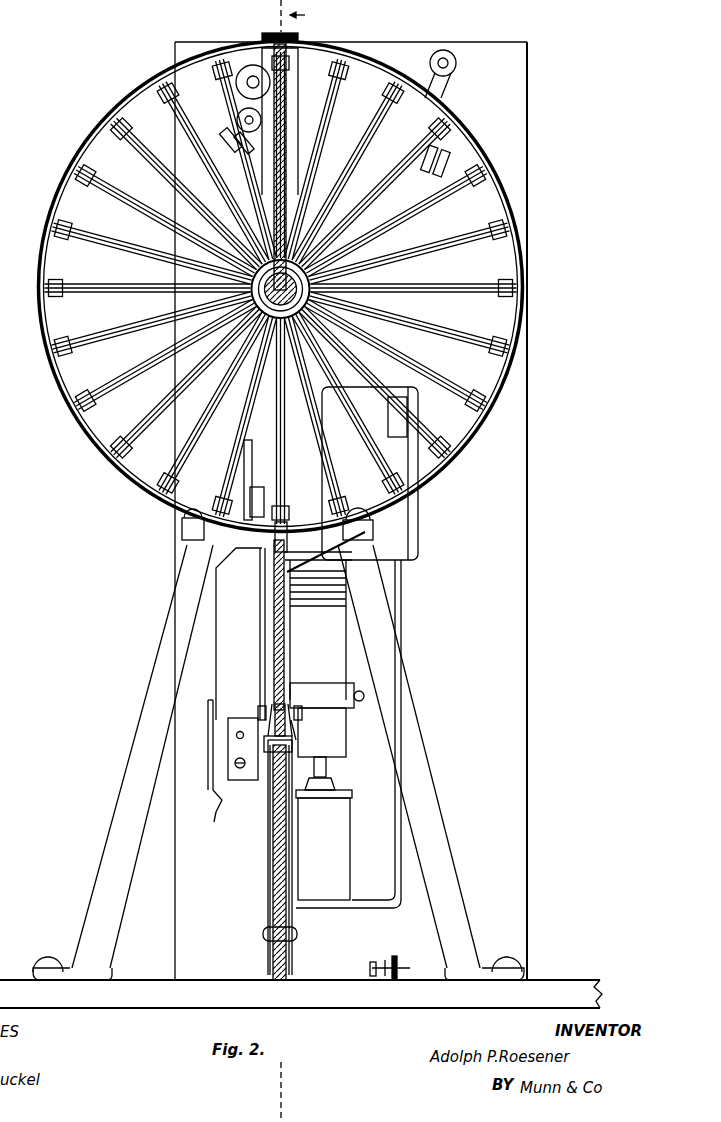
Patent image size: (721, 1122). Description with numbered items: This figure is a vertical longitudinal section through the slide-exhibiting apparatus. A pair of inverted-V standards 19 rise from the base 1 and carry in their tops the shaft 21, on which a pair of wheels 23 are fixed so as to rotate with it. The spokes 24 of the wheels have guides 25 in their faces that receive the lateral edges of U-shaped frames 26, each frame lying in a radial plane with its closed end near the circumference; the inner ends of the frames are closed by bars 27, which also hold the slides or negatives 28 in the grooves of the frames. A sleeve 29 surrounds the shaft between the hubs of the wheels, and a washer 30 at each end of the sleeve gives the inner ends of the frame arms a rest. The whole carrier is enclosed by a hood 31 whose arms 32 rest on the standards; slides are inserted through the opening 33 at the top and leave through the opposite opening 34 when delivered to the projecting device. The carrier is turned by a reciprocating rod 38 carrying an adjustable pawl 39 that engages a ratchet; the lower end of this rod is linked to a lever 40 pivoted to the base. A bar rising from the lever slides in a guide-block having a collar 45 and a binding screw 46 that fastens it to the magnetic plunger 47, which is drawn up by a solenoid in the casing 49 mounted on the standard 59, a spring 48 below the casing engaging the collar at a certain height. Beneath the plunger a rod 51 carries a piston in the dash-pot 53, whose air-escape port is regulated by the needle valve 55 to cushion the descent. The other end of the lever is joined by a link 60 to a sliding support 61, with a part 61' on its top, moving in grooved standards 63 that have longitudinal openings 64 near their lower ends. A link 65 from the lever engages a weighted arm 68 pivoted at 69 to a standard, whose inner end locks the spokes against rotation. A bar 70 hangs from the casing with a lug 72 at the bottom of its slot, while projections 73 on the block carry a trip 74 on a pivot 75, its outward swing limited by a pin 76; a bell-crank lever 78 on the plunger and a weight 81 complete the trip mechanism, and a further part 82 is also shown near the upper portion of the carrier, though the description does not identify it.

The base 1 is at (572, 982).
The standards 19 is at (120, 880).
The shaft 21 is at (283, 300).
The wheels 23 is at (78, 383).
The spokes 24 is at (118, 250).
The guides 25 is at (283, 445).
The U-shaped frames 26 is at (336, 120).
The bars 27 is at (284, 530).
The slides or negatives 28 is at (275, 625).
The sleeve 29 is at (168, 304).
The washer 30 is at (438, 242).
The hood 31 is at (478, 442).
The arms 32 is at (290, 97).
The opening 33 is at (268, 60).
The opening 34 is at (318, 547).
The reciprocating rod 38 is at (402, 637).
The pawl 39 is at (370, 405).
The lever 40 is at (293, 926).
The collar 45 is at (322, 695).
The binding screw 46 is at (361, 702).
The magnetic plunger 47 is at (322, 732).
The spring 48 is at (312, 600).
The casing 49 is at (420, 540).
The rod 51 is at (328, 768).
The cylinder or dash-pot 53 is at (324, 845).
The needle valve 55 is at (400, 968).
The standard 59 is at (528, 690).
The link 60 is at (272, 873).
The sliding support 61 is at (261, 707).
The element carried on the support 61' is at (311, 701).
The guides or standards 63 is at (340, 545).
The longitudinal openings 64 is at (285, 870).
The link 65 is at (258, 600).
The weighted arm 68 is at (247, 502).
The pivot 69 is at (250, 450).
The bar 70 is at (210, 750).
The projection or lug 72 is at (212, 811).
The projections 73 is at (244, 780).
The trip 74 is at (242, 705).
The pivot 75 is at (249, 750).
The pin 76 is at (269, 705).
The bell-crank lever 78 is at (446, 80).
The weight 81 is at (236, 86).
The crank 82 is at (448, 166).